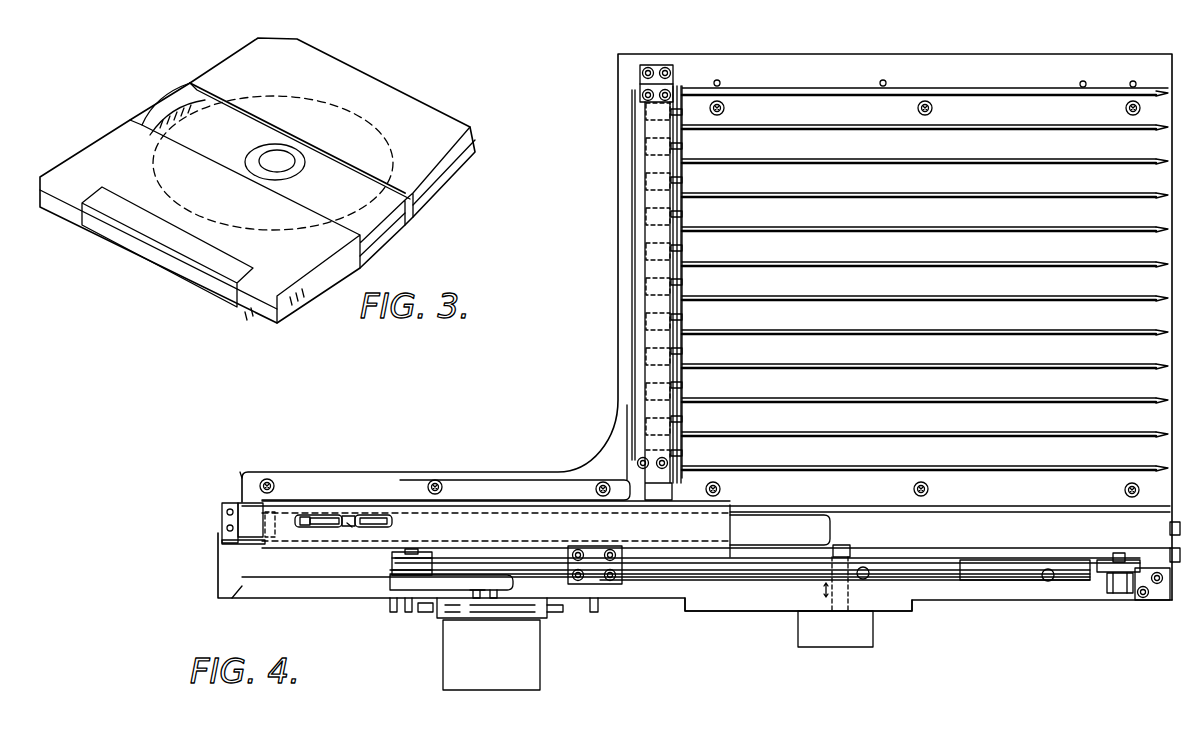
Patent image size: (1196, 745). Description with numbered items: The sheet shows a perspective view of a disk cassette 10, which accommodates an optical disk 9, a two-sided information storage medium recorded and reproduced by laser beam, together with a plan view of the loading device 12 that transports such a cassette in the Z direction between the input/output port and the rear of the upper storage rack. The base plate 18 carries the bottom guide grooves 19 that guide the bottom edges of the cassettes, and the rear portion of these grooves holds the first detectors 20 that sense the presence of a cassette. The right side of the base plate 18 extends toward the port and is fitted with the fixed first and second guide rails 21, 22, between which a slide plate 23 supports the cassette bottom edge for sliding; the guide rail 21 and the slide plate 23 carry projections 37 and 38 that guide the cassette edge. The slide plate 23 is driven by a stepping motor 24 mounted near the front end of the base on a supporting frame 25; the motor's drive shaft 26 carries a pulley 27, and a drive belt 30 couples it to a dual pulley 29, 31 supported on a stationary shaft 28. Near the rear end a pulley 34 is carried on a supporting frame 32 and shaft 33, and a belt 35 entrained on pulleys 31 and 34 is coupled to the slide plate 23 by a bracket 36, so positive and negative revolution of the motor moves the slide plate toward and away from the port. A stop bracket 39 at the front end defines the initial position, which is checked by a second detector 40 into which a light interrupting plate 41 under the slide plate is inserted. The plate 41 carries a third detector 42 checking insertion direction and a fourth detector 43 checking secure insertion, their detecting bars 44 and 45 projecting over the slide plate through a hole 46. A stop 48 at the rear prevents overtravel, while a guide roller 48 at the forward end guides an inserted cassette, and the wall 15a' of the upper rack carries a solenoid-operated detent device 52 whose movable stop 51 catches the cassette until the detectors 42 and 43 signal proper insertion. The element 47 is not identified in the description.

In FIG. 3, the optical disk 9 is at (177, 135).
In FIG. 3, the disk cassette 10 is at (497, 135).
In FIG. 4, the loading device 12 is at (483, 462).
In FIG. 4, the wall of upper storage rack 15a' is at (796, 622).
In FIG. 4, the base plate 18 is at (625, 80).
In FIG. 4, the bottom guide grooves 19 is at (935, 142).
In FIG. 4, the first detectors 20 is at (645, 208).
In FIG. 4, the first guide rail 21 is at (415, 487).
In FIG. 4, the second guide rail 22 is at (767, 575).
In FIG. 4, the slide plate 23 is at (733, 527).
In FIG. 4, the stepping motor 24 is at (530, 675).
In FIG. 4, the supporting frame 25 is at (548, 622).
In FIG. 4, the drive shaft 26 is at (492, 598).
In FIG. 4, the pulley 27 is at (477, 598).
In FIG. 4, the stationary shaft 28 is at (410, 612).
In FIG. 4, the dual pulley (first part) 29 is at (408, 600).
In FIG. 4, the drive belt 30 is at (443, 583).
In FIG. 4, the dual pulley (second part) 31 is at (392, 580).
In FIG. 4, the supporting frame 32 is at (1103, 587).
In FIG. 4, the shaft 33 is at (1120, 553).
In FIG. 4, the pulley 34 is at (1103, 560).
In FIG. 4, the belt 35 is at (1025, 568).
In FIG. 4, the bracket 36 is at (600, 593).
In FIG. 4, the projection 37 is at (533, 500).
In FIG. 4, the projection 38 is at (725, 542).
In FIG. 4, the stop bracket 39 is at (218, 572).
In FIG. 4, the second detector 40 is at (253, 497).
In FIG. 4, the light interrupting plate 41 is at (283, 528).
In FIG. 4, the third detector 42 is at (328, 513).
In FIG. 4, the fourth detector 43 is at (382, 512).
In FIG. 4, the detecting bar 44 is at (307, 517).
In FIG. 4, the detecting bar 45 is at (352, 517).
In FIG. 4, the hole 46 is at (347, 523).
In FIG. 4, the stop block 47 is at (830, 530).
In FIG. 4, the stop / guide roller 48 is at (240, 505).
In FIG. 4, the movable stop 51 is at (850, 552).
In FIG. 4, the solenoid-operated detent device 52 is at (873, 633).